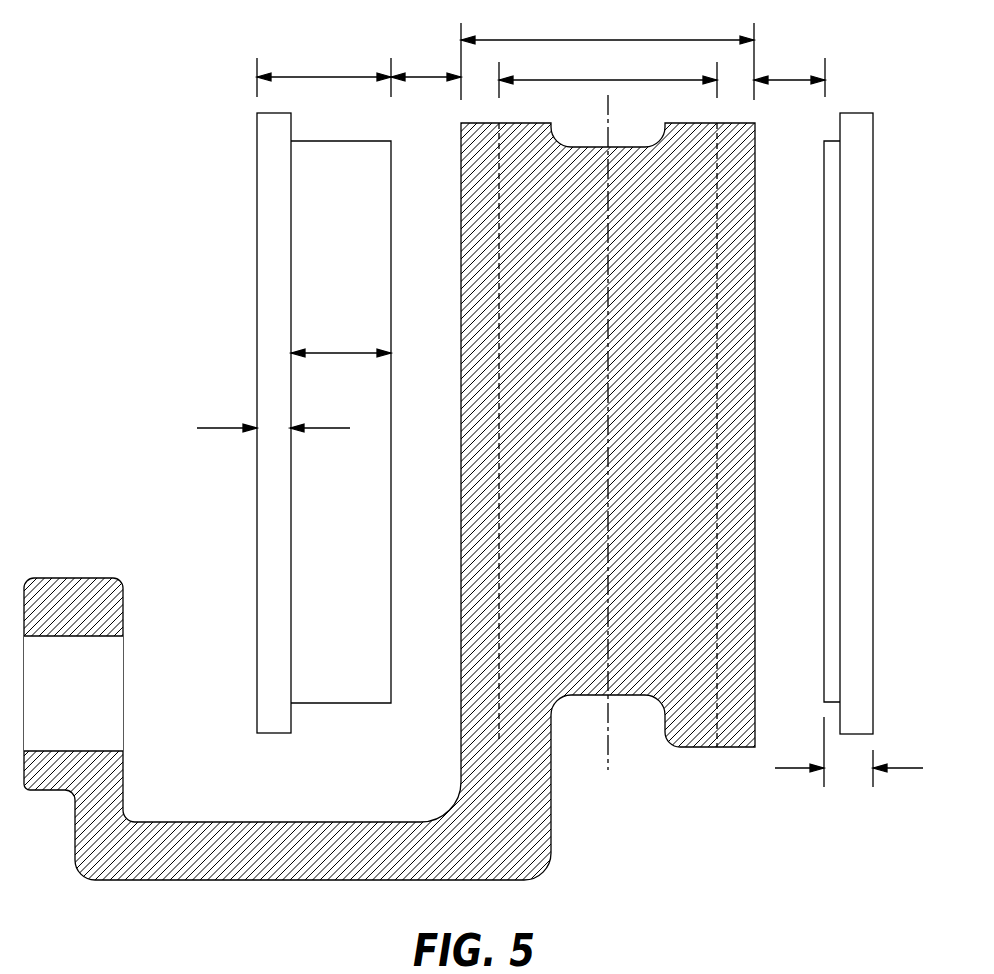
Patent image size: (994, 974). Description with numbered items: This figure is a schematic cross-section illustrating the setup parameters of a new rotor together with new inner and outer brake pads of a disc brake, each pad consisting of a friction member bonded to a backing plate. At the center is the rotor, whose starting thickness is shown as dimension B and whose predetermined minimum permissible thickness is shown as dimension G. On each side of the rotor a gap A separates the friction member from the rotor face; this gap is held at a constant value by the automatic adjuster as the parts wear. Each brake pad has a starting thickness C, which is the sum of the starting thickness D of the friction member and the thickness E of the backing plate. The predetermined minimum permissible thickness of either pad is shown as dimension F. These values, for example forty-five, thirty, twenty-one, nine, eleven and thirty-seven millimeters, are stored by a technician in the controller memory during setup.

The gap between friction members and rotor A is at (428, 76).
The starting thickness of the rotor B is at (612, 40).
The starting thickness of the brake pad C is at (329, 77).
The starting thickness of the friction member D is at (341, 351).
The thickness of the backing plate E is at (221, 428).
The predetermined minimum permissible thickness amount of pad F is at (796, 773).
The predetermined minimum permissible thickness amount of rotor G is at (607, 80).